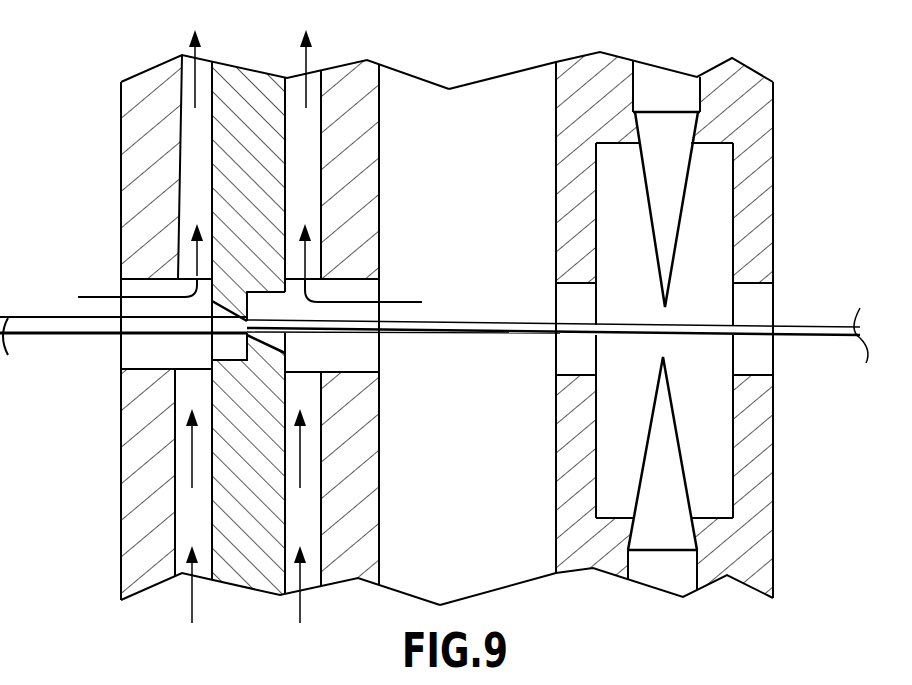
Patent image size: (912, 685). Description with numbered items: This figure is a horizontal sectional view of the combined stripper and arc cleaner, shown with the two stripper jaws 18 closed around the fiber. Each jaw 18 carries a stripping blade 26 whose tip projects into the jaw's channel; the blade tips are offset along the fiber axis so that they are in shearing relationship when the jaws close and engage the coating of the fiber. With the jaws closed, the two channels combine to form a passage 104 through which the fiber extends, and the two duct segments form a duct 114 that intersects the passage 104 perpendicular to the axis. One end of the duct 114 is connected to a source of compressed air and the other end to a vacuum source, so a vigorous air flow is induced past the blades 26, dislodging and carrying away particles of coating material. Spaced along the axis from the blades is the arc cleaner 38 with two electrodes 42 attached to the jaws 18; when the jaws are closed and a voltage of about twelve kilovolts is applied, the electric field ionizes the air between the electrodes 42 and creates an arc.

The jaws 18 is at (124, 170).
The stripping blade 26 is at (253, 78).
The duct 114 is at (308, 188).
The passage 104 is at (128, 357).
The arc cleaner 38 is at (775, 172).
The electrodes 42 is at (685, 213).